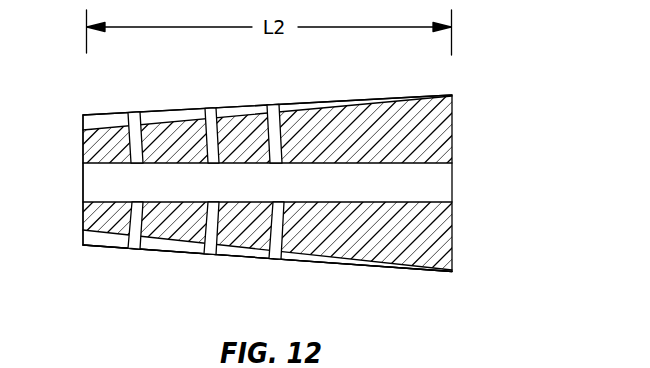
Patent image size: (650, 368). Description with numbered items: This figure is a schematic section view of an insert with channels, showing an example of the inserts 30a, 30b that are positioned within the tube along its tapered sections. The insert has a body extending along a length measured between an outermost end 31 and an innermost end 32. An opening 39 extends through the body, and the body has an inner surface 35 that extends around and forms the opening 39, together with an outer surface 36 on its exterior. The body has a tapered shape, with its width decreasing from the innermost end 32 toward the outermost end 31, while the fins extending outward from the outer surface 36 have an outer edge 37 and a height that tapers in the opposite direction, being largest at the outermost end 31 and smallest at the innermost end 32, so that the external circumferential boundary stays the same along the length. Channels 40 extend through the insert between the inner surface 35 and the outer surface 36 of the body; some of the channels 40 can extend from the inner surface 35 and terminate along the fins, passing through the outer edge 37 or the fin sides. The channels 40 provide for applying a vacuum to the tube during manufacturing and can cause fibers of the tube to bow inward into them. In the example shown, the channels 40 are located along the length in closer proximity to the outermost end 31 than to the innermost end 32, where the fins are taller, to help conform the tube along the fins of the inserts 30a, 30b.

The insert 30a is at (349, 185).
The insert 30b is at (478, 117).
The outermost end 31 is at (83, 140).
The innermost end 32 is at (452, 238).
The inner surface 35 is at (310, 202).
The outer surface 36 is at (328, 107).
The outer edge 37 is at (108, 115).
The opening 39 is at (430, 187).
The channels 40 is at (133, 114).